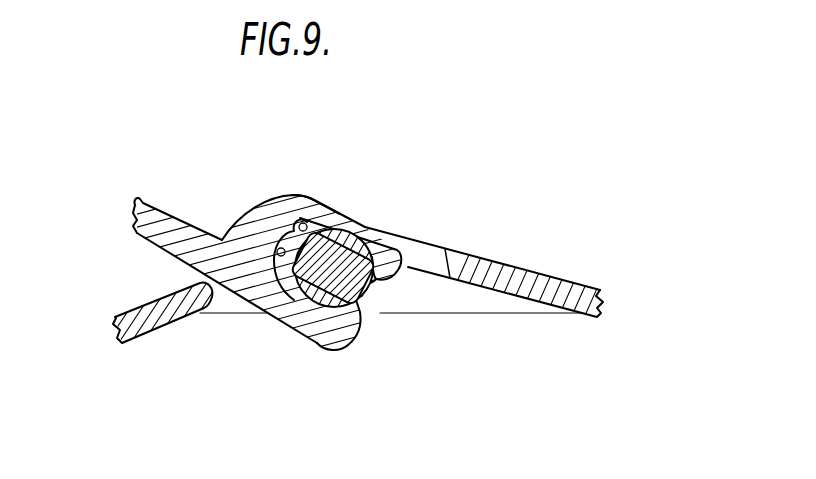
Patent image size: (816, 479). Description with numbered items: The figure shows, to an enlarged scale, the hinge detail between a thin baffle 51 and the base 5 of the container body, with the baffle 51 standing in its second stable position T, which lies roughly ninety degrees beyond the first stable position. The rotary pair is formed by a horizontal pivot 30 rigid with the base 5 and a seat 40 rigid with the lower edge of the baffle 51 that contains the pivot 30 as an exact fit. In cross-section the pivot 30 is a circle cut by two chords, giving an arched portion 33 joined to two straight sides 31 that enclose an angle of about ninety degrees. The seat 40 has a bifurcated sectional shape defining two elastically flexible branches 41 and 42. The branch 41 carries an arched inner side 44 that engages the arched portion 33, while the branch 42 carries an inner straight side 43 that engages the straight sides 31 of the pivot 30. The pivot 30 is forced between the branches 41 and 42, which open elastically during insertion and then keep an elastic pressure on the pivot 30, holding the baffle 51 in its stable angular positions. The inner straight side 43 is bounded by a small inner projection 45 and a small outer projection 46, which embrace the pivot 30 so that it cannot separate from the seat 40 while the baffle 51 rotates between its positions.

The base 5 is at (552, 310).
The horizontal pivot 30 is at (317, 333).
The straight sides 31 is at (282, 240).
The arched portion 33 is at (250, 292).
The seat 40 is at (192, 249).
The elastically flexible branch 41 is at (290, 323).
The elastically flexible branch 42 is at (312, 216).
The inner straight side 43 is at (385, 283).
The arched inner side 44 is at (340, 308).
The small inner projection 45 is at (300, 222).
The small outer projection 46 is at (410, 265).
The baffle 51 is at (181, 214).
The second stable position T is at (91, 217).